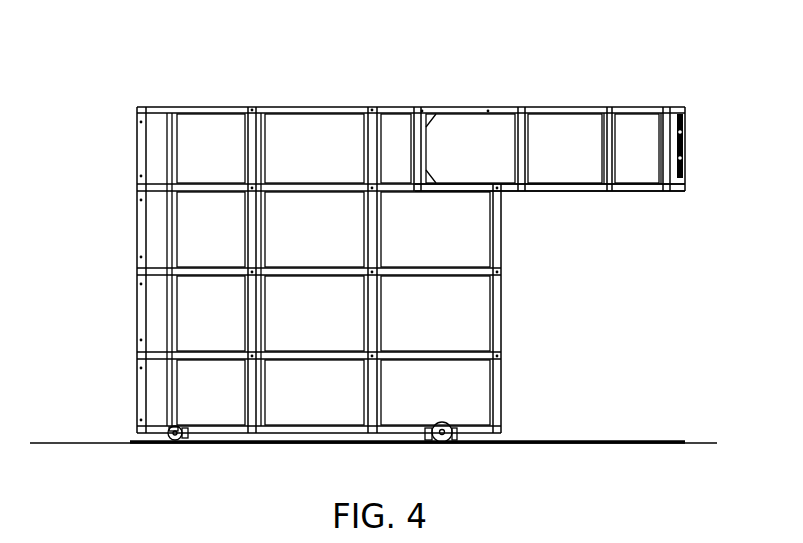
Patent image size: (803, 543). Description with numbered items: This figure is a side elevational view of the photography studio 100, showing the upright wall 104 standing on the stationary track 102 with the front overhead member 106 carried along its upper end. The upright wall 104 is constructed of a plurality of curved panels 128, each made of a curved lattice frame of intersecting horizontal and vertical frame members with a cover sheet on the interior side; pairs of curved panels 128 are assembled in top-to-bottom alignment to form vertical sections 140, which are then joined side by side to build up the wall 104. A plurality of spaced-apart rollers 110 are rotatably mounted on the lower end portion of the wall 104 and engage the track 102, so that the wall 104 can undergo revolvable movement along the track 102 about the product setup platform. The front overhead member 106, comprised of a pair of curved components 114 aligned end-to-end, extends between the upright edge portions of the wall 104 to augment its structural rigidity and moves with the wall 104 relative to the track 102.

The photography studio 100 is at (637, 46).
The stationary track 102 is at (615, 444).
The upright wall 104 is at (225, 89).
The front overhead member 106 is at (625, 96).
The rollers 110 is at (165, 441).
The curved components 114 is at (592, 197).
The curved panels 128 is at (129, 208).
The vertical sections 140 is at (188, 99).